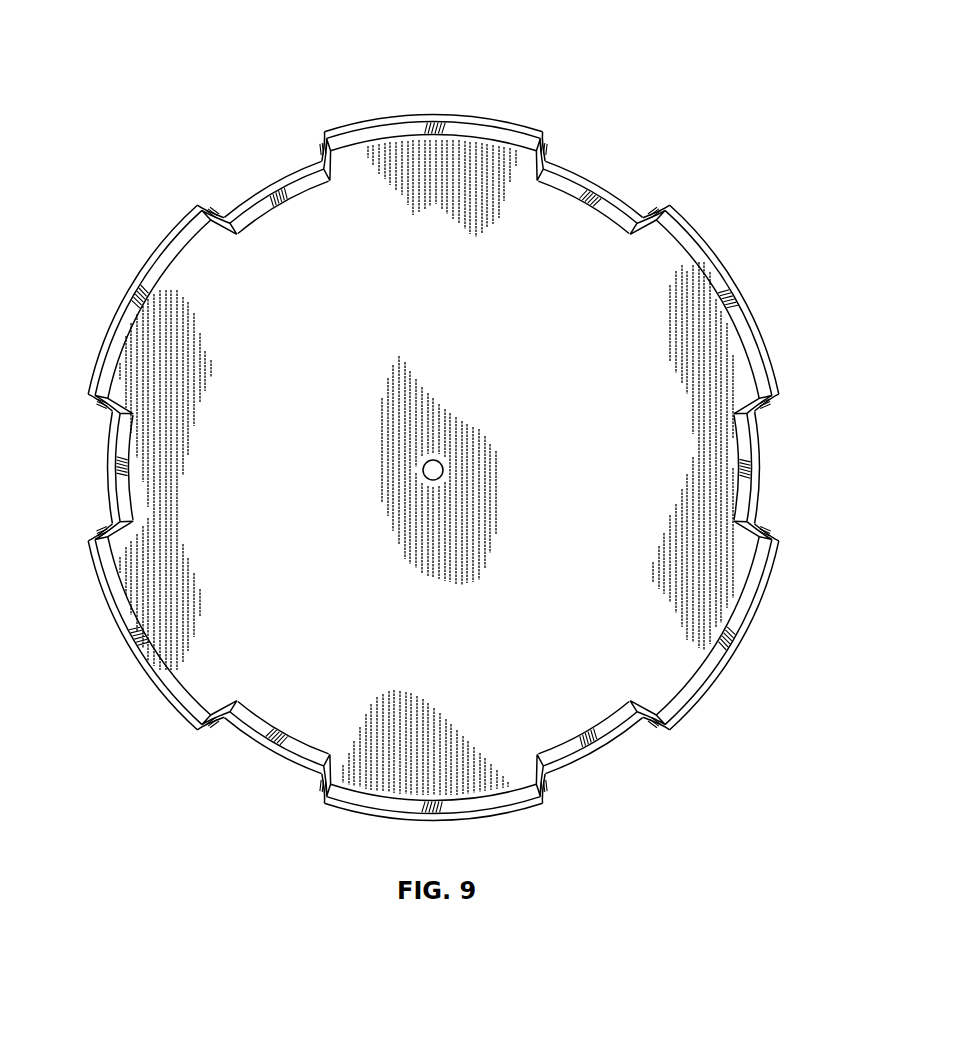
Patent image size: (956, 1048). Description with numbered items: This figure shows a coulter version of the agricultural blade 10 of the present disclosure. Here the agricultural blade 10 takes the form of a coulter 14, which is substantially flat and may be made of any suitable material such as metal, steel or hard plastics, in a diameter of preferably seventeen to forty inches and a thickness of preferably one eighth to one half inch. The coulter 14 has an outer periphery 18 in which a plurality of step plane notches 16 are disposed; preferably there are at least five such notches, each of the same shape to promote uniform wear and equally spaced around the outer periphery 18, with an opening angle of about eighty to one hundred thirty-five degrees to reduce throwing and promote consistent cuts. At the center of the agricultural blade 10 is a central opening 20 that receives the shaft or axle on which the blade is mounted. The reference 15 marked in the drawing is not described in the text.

The agricultural blade 10 is at (674, 58).
The coulter 14 is at (600, 172).
The rim step segment 15 is at (240, 745).
The step plane notch 16 is at (765, 470).
The outer periphery 18 is at (738, 274).
The central opening 20 is at (421, 471).